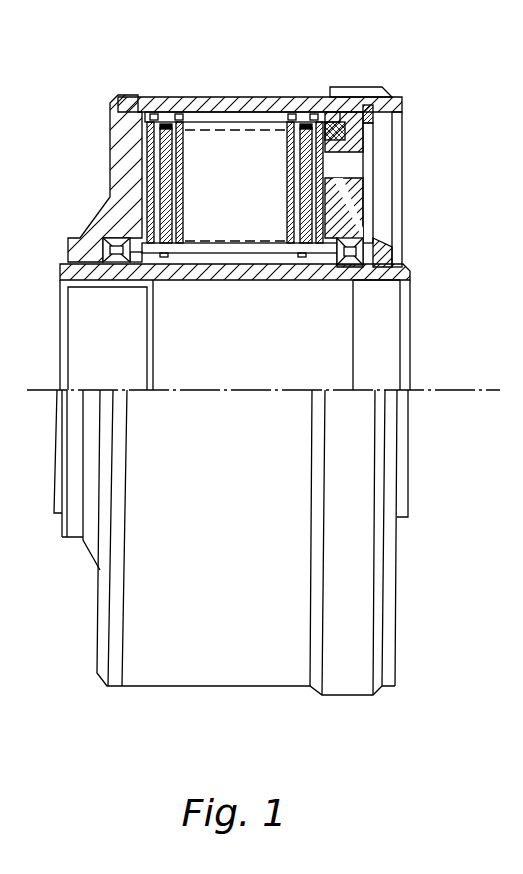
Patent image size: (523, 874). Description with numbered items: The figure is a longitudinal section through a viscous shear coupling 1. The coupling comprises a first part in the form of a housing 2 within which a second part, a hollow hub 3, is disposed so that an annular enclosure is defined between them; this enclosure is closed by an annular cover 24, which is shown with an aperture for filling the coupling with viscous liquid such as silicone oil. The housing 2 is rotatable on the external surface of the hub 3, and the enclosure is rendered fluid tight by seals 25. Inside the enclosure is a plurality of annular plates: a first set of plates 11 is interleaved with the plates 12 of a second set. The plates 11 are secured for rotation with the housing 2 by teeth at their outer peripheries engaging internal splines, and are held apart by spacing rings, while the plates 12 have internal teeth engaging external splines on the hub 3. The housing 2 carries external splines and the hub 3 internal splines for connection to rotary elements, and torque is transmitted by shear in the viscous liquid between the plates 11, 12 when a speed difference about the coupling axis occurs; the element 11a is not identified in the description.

The viscous shear coupling 1 is at (312, 84).
The housing 2 is at (190, 100).
The hollow hub 3 is at (379, 274).
The first set of plates 11 is at (290, 152).
The bobbin flange 11a is at (155, 112).
The plates of second set 12 is at (298, 204).
The annular cover 24 is at (347, 213).
The seals 25 is at (115, 240).